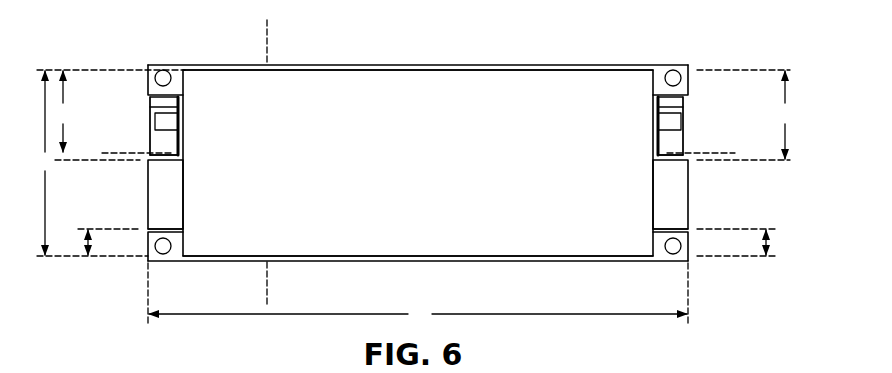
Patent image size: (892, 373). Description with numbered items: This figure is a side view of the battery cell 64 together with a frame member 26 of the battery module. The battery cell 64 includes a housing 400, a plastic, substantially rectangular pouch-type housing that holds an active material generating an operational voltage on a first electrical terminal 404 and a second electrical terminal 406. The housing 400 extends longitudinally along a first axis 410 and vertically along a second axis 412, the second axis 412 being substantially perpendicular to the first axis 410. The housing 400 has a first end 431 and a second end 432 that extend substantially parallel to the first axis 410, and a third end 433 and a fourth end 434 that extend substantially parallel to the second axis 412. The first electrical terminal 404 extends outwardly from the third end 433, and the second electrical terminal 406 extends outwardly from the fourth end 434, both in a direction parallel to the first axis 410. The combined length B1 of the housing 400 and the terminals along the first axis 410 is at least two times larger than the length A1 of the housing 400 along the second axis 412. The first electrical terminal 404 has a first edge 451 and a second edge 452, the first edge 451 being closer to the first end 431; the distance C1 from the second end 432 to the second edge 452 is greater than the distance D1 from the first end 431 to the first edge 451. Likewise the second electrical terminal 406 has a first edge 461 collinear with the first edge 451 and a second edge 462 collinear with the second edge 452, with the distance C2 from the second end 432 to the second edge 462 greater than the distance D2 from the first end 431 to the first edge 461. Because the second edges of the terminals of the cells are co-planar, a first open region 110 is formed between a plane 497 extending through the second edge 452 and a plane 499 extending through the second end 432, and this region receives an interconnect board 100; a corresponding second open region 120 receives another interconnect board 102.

The housing 400 is at (398, 92).
The battery cell 64 is at (580, 50).
The second end 432 is at (448, 70).
The first end 431 is at (403, 257).
The frame member 26 is at (163, 70).
The third end 433 is at (174, 252).
The fourth end 434 is at (660, 248).
The first edge of first electrical terminal 451 is at (148, 247).
The first edge of second electrical terminal 461 is at (687, 245).
The first electrical terminal 404 is at (160, 210).
The second electrical terminal 406 is at (693, 192).
The interconnect board 100 is at (148, 98).
The first open region 110 is at (151, 95).
The second edge of first electrical terminal 452 is at (155, 155).
The interconnect board 102 is at (681, 100).
The second open region 120 is at (686, 97).
The second edge of second electrical terminal 462 is at (668, 155).
The first axis 410 is at (115, 153).
The plane 499 is at (83, 70).
The plane 497 is at (125, 160).
The second axis 412 is at (268, 38).
The length A1 is at (93, 163).
The combined length B1 is at (418, 293).
The distance C1 is at (63, 111).
The distance C2 is at (785, 115).
The distance D1 is at (88, 232).
The distance D2 is at (766, 232).